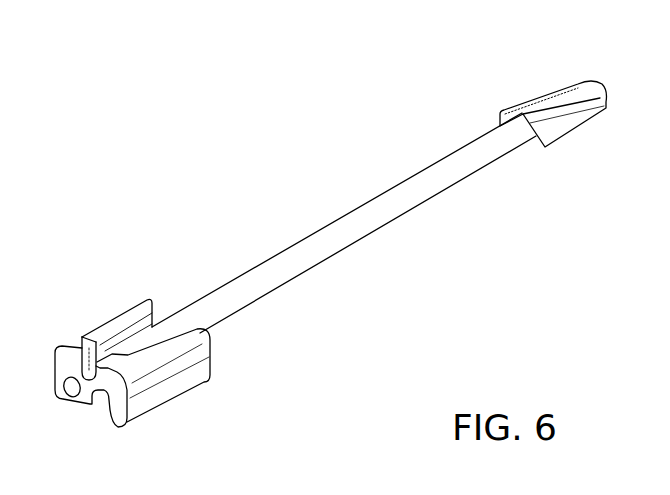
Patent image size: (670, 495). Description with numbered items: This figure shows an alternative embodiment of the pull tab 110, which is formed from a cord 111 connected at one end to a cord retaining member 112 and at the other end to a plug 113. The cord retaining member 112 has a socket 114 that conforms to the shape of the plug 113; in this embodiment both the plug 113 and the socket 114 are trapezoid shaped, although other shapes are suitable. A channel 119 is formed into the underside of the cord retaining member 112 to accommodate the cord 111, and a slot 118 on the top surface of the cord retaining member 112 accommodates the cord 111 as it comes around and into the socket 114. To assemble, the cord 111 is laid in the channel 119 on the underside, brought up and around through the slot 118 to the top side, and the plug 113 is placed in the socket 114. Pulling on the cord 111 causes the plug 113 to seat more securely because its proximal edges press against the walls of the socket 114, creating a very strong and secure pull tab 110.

The pull tab 110 is at (282, 181).
The cord 111 is at (348, 242).
The cord retaining member 112 is at (196, 372).
The plug 113 is at (546, 100).
The socket 114 is at (134, 333).
The slot 118 is at (82, 352).
The channel 119 is at (110, 418).